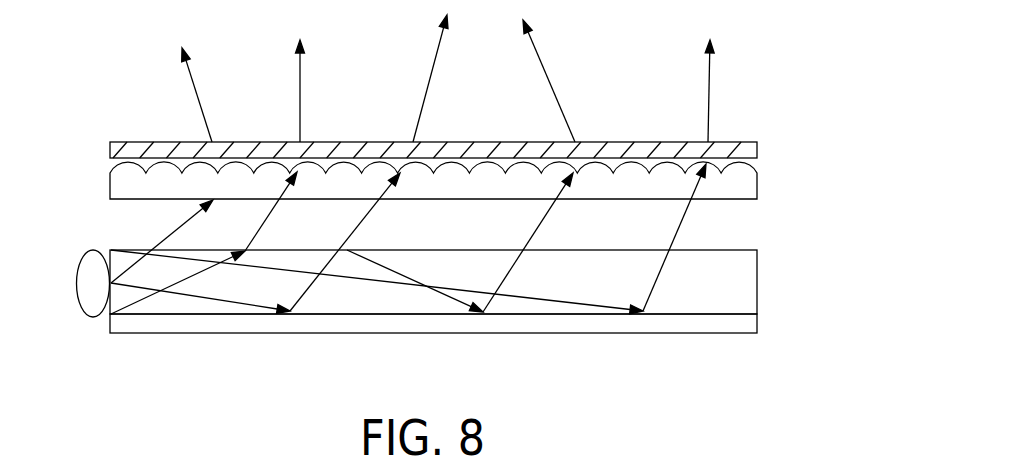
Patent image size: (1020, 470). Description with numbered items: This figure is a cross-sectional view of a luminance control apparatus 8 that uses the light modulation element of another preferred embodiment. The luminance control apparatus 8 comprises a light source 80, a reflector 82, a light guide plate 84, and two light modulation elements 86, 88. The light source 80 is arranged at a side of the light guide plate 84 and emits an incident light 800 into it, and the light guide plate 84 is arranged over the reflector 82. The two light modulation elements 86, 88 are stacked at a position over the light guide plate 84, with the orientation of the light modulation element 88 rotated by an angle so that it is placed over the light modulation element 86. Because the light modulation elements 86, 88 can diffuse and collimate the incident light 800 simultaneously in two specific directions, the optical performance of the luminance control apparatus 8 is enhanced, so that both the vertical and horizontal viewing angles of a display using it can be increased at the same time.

The luminance control apparatus 8 is at (782, 110).
The light source 80 is at (88, 285).
The incident light 800 is at (144, 288).
The reflector 82 is at (750, 323).
The light guide plate 84 is at (743, 282).
The light modulation element 86 is at (752, 186).
The light modulation element 88 is at (750, 150).